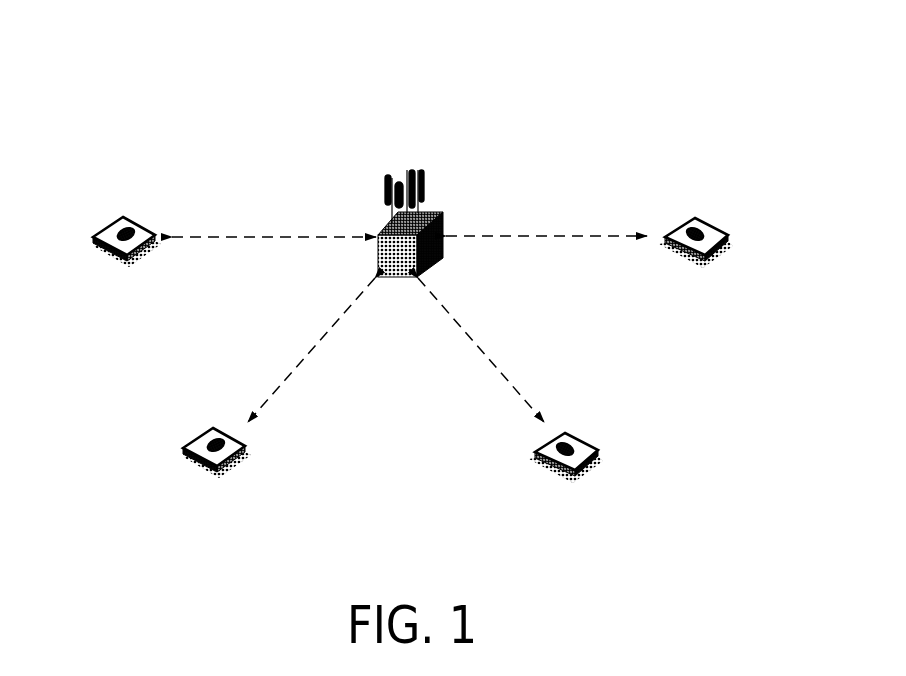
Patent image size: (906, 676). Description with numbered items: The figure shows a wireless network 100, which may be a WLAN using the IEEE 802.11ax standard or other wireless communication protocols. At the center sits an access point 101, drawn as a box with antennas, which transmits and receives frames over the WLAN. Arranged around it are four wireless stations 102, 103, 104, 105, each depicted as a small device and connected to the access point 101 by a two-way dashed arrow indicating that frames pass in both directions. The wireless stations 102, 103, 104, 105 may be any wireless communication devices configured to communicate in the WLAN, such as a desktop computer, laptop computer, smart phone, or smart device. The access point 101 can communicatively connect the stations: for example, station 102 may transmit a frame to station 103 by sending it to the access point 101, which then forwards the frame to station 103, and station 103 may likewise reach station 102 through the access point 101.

The wireless network 100 is at (623, 72).
The access point 101 is at (397, 279).
The wireless station 102 is at (127, 261).
The wireless station 103 is at (217, 472).
The wireless station 104 is at (575, 476).
The wireless station 105 is at (705, 261).